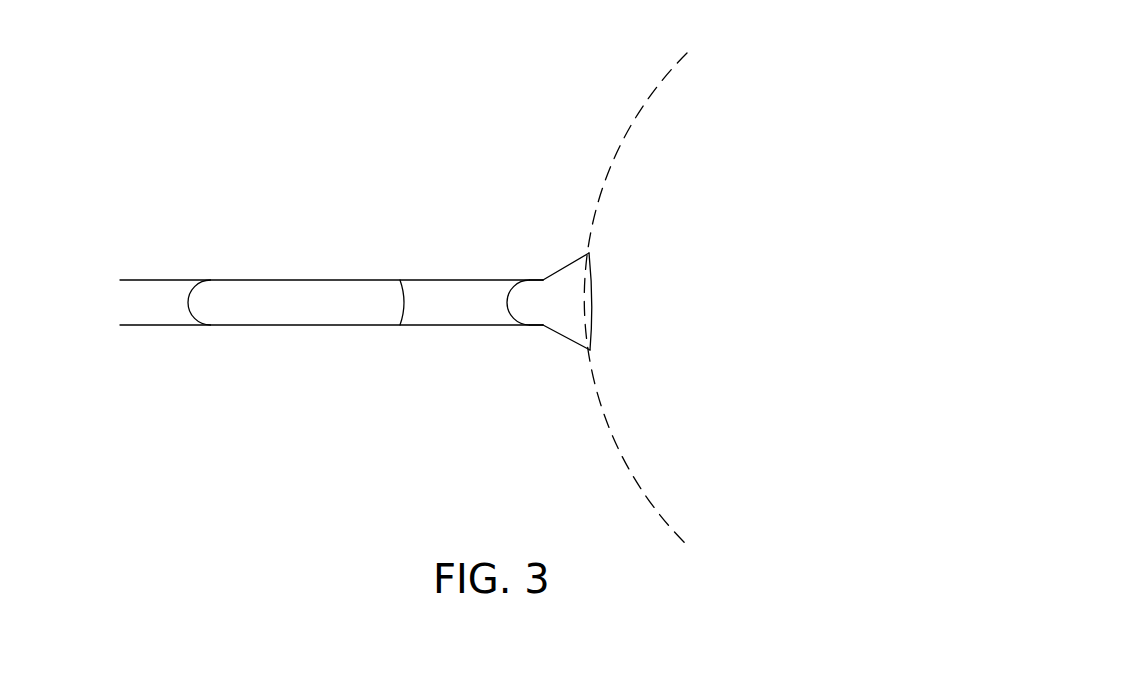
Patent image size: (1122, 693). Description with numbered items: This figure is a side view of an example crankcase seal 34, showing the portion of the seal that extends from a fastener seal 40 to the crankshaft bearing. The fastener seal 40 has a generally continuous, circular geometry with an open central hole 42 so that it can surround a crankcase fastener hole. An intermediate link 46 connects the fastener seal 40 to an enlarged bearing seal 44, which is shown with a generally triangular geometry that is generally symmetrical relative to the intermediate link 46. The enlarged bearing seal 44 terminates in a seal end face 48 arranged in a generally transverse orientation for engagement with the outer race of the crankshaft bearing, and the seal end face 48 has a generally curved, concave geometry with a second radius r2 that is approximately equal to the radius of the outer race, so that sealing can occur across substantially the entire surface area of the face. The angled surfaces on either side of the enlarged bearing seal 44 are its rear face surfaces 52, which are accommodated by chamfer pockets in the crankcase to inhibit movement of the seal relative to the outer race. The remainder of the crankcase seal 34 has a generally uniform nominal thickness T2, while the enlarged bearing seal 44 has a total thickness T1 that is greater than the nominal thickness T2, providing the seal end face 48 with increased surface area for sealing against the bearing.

The crankcase seal 34 is at (173, 143).
The fastener seal 40 is at (258, 290).
The open central hole 42 is at (330, 345).
The enlarged bearing seal 44 is at (537, 325).
The intermediate link 46 is at (432, 290).
The seal end face 48 is at (600, 303).
The rear face surfaces 52 is at (565, 251).
The total thickness T1 is at (592, 253).
The nominal thickness T2 is at (117, 358).
The second radius r2 is at (932, 300).